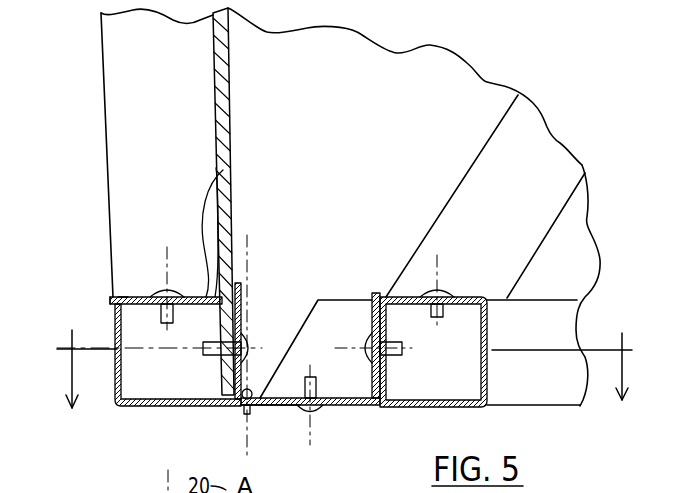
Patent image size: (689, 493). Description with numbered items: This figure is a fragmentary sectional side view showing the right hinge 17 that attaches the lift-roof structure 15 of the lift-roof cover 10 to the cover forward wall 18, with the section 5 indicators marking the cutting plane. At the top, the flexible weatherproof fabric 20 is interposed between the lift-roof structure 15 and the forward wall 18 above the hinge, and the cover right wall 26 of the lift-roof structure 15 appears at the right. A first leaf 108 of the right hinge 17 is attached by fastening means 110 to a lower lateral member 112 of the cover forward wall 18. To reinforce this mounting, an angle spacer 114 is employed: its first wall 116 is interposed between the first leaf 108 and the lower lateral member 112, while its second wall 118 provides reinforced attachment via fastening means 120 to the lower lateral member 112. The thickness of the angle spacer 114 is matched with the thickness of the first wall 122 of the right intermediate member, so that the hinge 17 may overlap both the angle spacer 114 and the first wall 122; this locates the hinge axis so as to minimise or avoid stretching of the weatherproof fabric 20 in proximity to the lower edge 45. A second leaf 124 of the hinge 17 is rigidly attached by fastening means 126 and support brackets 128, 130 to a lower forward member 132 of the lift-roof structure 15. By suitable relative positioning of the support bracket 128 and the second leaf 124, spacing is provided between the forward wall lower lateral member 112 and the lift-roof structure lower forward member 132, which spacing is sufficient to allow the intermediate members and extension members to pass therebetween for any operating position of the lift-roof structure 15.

The section line 5- 5 is at (345, 369).
The lift-roof cover 10 is at (517, 120).
The lift-roof structure 15 is at (533, 163).
The right hinge 17 is at (247, 370).
The cover forward wall 18 is at (118, 80).
The flexible weatherproof fabric 20 is at (363, 70).
The cover right wall 26 is at (570, 250).
The lower edge 45 is at (263, 408).
The first leaf 108 is at (247, 297).
The fastening means 110 is at (202, 355).
The lower lateral member 112 is at (105, 300).
The angle spacer 114 is at (216, 168).
The first wall 116 is at (225, 408).
The second wall 118 is at (123, 300).
The fastening means 120 is at (173, 293).
The first wall 122 is at (226, 215).
The second leaf 124 is at (345, 403).
The fastening means 126 is at (430, 290).
The support bracket 128 is at (367, 313).
The support bracket 130 is at (477, 297).
The lower forward member 132 is at (487, 357).